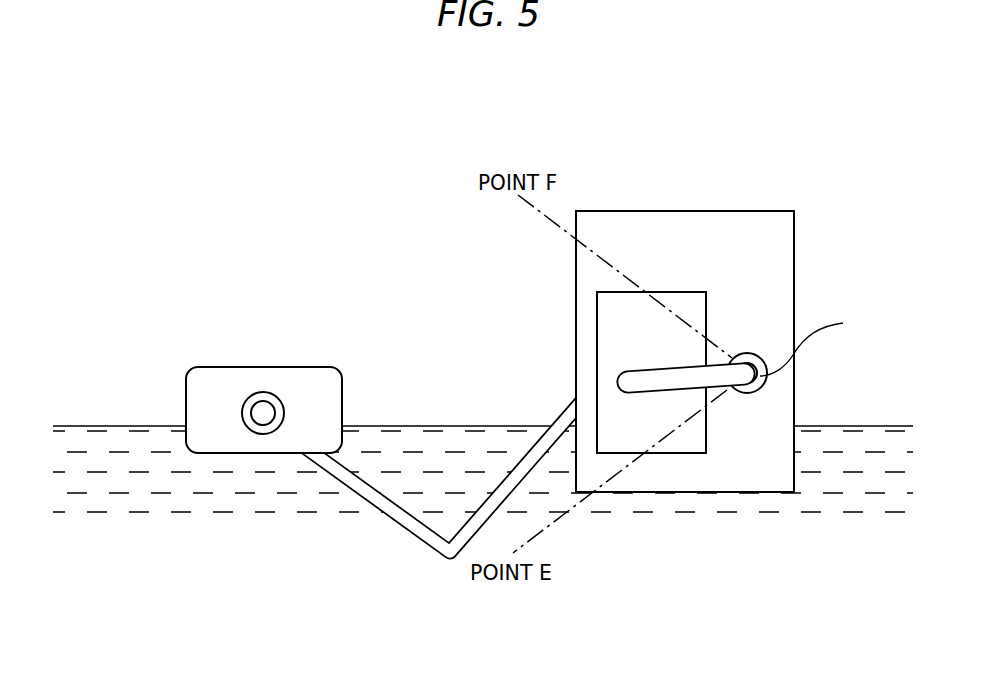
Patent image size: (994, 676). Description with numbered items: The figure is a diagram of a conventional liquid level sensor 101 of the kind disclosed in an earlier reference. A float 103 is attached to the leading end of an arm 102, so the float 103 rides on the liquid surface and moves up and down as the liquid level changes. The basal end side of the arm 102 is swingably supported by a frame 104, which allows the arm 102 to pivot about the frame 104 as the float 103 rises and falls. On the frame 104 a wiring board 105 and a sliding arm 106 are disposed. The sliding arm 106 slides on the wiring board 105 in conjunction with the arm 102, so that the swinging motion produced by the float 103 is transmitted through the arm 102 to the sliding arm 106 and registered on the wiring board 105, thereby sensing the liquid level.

The liquid level sensor 101 is at (729, 301).
The arm 102 is at (405, 533).
The float 103 is at (247, 375).
The frame 104 is at (610, 211).
The wiring board 105 is at (637, 313).
The sliding arm 106 is at (685, 375).